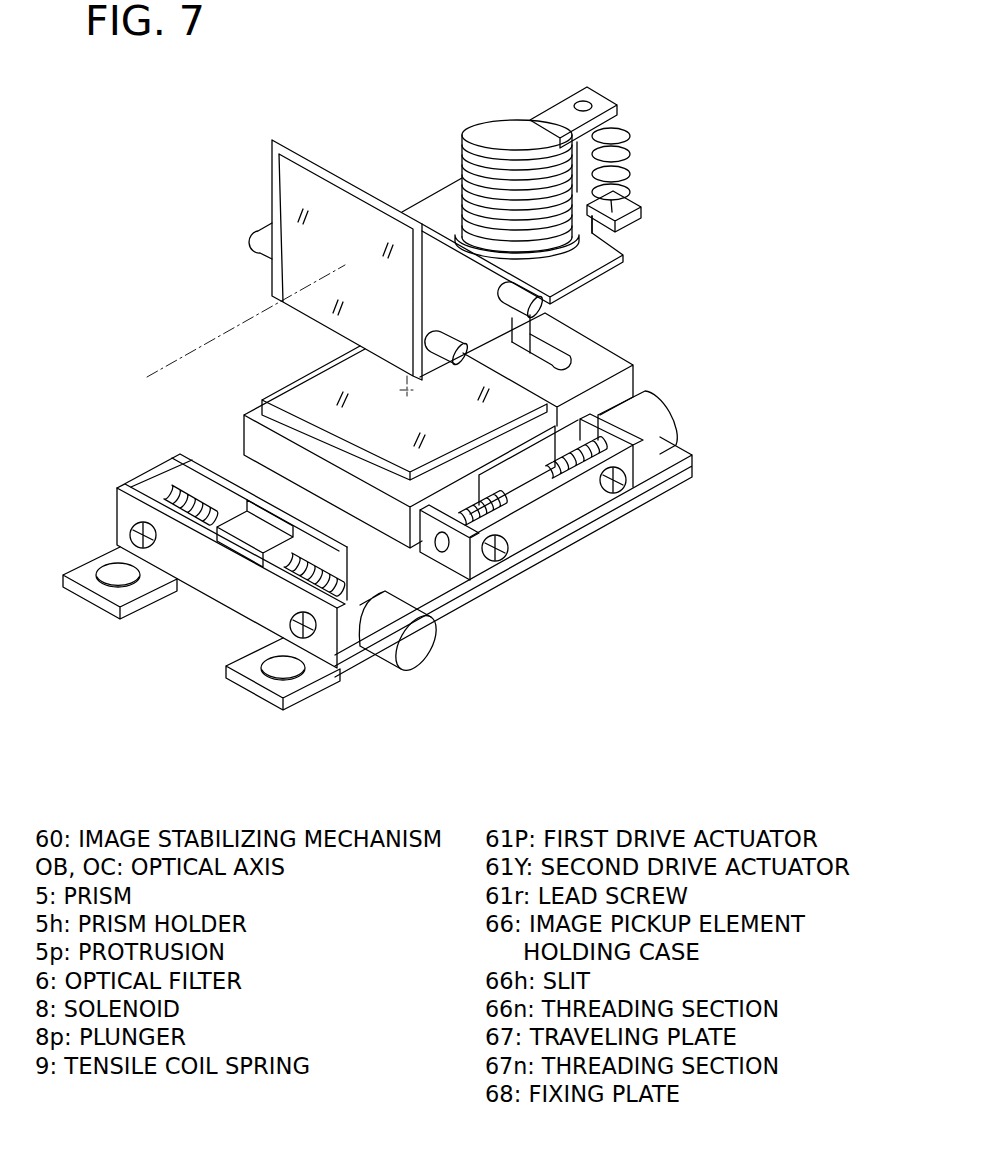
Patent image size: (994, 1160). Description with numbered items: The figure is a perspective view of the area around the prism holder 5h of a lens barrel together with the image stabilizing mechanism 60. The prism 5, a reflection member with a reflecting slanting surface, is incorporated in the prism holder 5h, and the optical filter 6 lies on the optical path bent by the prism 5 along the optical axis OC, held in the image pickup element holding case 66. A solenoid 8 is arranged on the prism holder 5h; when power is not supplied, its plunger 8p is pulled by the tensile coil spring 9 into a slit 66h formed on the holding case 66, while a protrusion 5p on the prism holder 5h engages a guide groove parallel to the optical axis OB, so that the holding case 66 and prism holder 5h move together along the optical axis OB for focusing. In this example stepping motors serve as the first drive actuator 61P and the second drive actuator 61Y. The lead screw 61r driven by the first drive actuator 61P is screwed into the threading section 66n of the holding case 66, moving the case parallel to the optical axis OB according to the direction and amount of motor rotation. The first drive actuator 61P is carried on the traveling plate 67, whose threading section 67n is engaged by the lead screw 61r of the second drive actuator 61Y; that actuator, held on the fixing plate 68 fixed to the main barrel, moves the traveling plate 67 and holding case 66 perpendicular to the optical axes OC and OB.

The image stabilizing mechanism 60 is at (712, 452).
The optical axis OB is at (170, 366).
The optical axis OC is at (400, 390).
The prism 5 is at (297, 268).
The prism holder 5h is at (572, 280).
The protrusion 5p is at (450, 326).
The optical filter 6 is at (307, 392).
The solenoid 8 is at (463, 173).
The plunger 8p is at (528, 118).
The tensile coil spring 9 is at (630, 158).
The first drive actuator 61P is at (641, 410).
The second drive actuator 61Y is at (380, 645).
The lead screw 61r is at (178, 498).
The image pickup element holding case 66 is at (573, 345).
The slit 66h is at (567, 358).
The threading section 66n is at (560, 503).
The traveling plate 67 is at (383, 572).
The threading section 67n is at (250, 530).
The fixing plate 68 is at (295, 687).